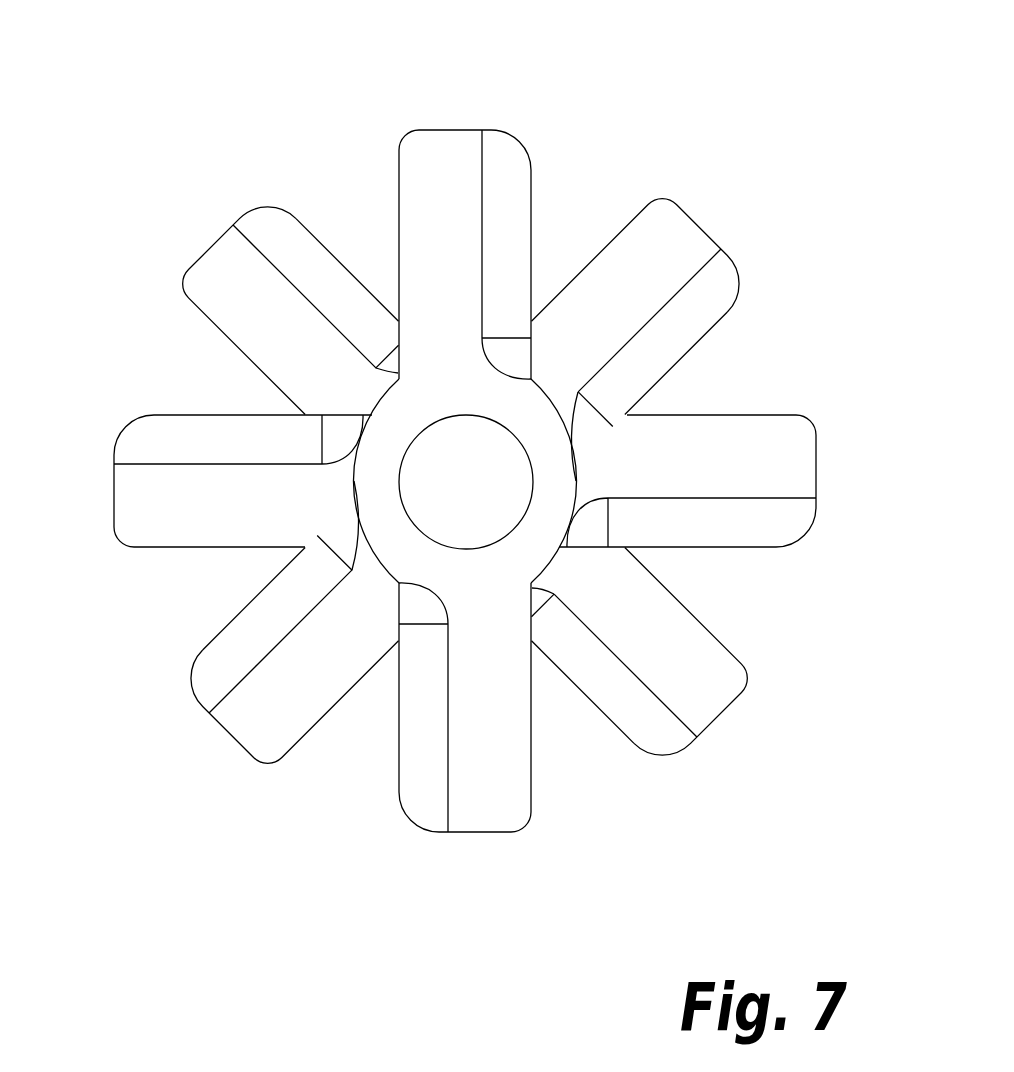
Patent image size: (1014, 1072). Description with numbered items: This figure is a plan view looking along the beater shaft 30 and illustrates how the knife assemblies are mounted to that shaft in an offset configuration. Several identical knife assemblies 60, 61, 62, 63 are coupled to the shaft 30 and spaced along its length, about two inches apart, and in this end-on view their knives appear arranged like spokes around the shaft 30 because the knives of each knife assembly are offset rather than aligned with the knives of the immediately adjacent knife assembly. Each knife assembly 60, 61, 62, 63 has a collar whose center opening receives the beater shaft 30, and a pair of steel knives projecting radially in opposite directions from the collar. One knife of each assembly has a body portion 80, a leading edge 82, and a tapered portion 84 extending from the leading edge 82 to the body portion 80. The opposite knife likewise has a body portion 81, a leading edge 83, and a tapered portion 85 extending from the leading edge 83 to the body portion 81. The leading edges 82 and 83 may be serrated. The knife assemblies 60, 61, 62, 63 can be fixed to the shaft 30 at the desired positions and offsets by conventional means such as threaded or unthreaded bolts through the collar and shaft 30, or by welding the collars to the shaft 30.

The beater shaft 30 is at (466, 482).
The knife assembly 60 is at (409, 99).
The knife assembly 61 is at (700, 166).
The knife assembly 62 is at (837, 399).
The knife assembly 63 is at (776, 706).
The body portion 80 is at (432, 187).
The body portion 81 is at (227, 285).
The leading edge 82 is at (537, 217).
The leading edge 83 is at (330, 252).
The tapered portion 84 is at (507, 178).
The tapered portion 85 is at (282, 242).